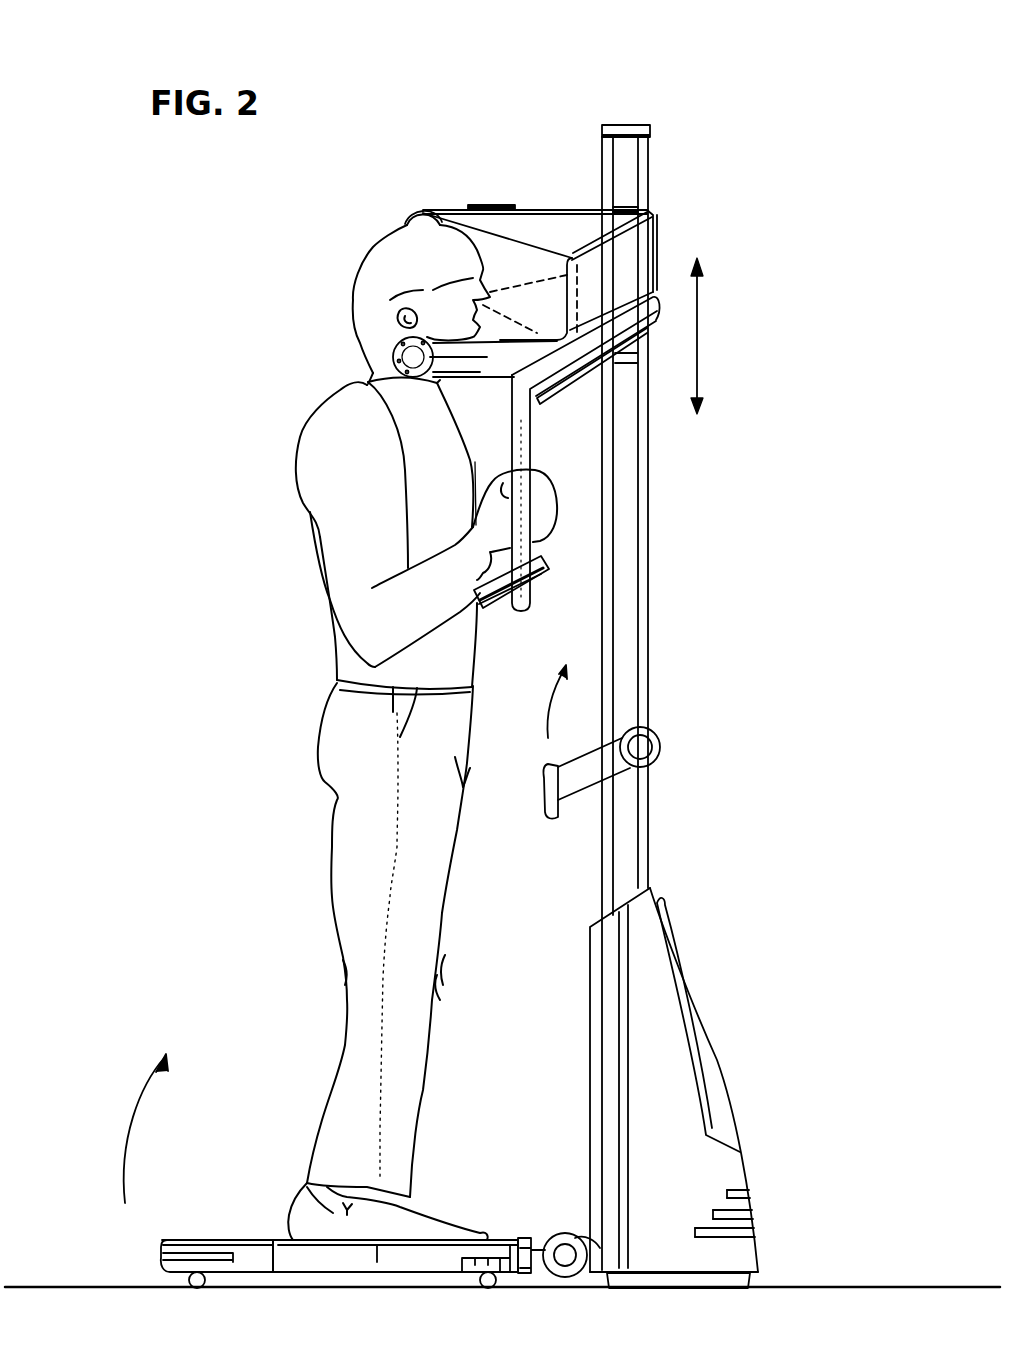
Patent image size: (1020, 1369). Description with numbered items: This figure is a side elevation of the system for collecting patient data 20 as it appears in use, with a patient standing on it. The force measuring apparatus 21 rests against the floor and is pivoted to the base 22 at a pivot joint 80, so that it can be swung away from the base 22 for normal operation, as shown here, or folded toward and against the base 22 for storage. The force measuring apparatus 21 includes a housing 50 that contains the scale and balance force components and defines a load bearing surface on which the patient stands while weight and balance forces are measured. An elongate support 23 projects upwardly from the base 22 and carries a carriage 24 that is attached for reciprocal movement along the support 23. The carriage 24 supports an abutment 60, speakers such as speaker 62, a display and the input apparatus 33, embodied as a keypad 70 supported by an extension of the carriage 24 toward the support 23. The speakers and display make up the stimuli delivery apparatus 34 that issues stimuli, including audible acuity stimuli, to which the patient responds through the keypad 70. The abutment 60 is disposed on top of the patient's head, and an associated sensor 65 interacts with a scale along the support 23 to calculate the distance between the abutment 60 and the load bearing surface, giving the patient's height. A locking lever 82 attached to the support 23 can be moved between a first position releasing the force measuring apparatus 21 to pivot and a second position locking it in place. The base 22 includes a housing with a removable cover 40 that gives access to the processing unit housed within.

The system for collecting patient data 20 is at (453, 117).
The force measuring apparatus 21 is at (213, 1246).
The base 22 is at (582, 1228).
The elongate support 23 is at (633, 827).
The carriage 24 is at (640, 248).
The input apparatus 33 is at (480, 596).
The stimuli delivery apparatus 34 is at (507, 275).
The removable cover 40 is at (723, 1170).
The housing 50 is at (263, 1240).
The abutment 60 is at (407, 222).
The speaker 62 is at (395, 362).
The sensor 65 is at (488, 205).
The keypad 70 is at (545, 560).
The pivot joint 80 is at (513, 1240).
The locking lever 82 is at (570, 780).